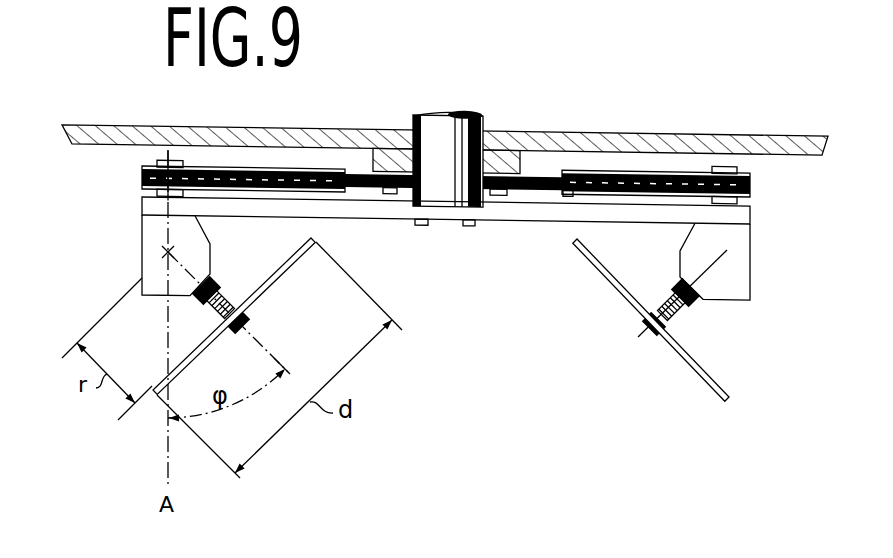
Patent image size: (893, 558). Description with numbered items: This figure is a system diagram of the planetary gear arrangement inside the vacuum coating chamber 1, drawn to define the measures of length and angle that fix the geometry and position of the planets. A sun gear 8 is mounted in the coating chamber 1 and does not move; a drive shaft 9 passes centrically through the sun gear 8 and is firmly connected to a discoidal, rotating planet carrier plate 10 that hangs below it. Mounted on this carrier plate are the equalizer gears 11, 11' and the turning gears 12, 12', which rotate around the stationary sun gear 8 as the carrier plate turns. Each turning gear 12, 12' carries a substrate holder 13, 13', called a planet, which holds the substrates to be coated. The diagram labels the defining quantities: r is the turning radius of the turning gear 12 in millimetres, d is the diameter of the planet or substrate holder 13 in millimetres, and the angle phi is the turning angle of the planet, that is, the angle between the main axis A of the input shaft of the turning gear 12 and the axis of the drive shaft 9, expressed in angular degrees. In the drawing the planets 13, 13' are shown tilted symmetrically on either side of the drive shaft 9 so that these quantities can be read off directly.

The vacuum coating chamber 1 is at (607, 133).
The sun gear 8 is at (541, 170).
The drive shaft 9 is at (483, 112).
The planet carrier plate 10 is at (145, 205).
The equalizer gear 11 is at (191, 176).
The equalizer gear 11' is at (587, 191).
The turning gear 12 is at (186, 294).
The turning gear 12' is at (722, 280).
The substrate holder (planet) 13 is at (237, 316).
The substrate holder (planet) 13' is at (632, 320).